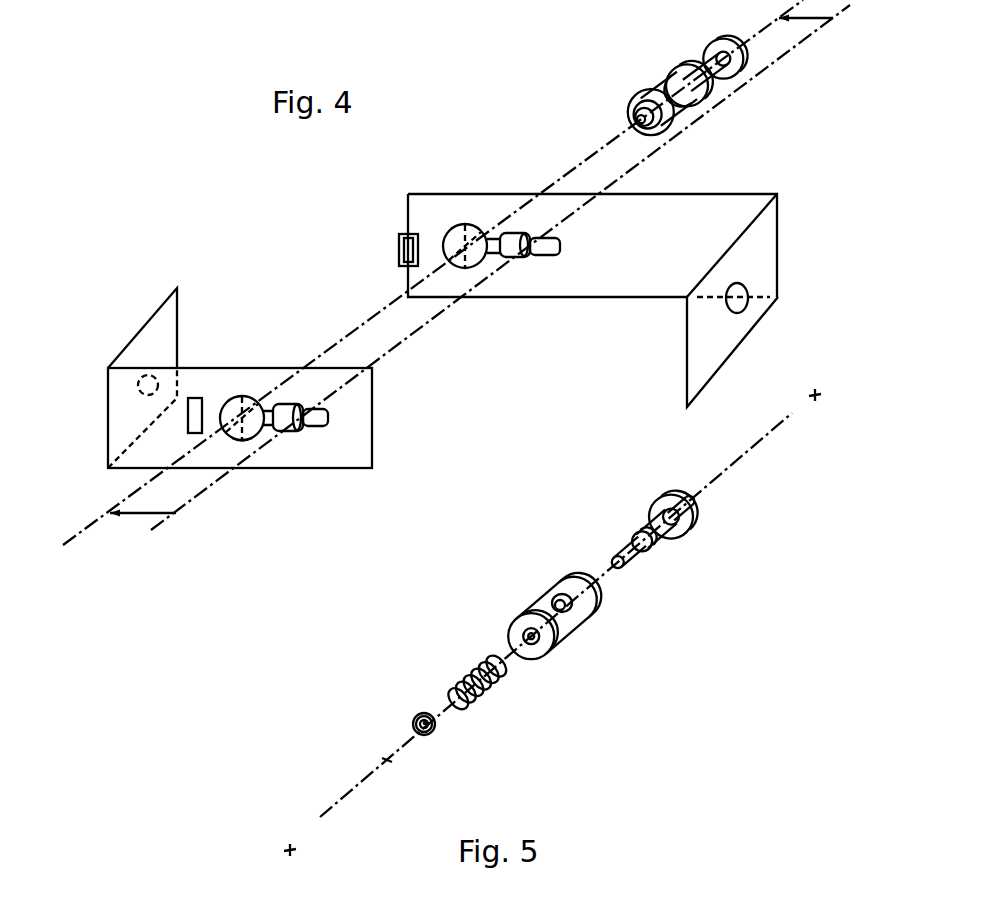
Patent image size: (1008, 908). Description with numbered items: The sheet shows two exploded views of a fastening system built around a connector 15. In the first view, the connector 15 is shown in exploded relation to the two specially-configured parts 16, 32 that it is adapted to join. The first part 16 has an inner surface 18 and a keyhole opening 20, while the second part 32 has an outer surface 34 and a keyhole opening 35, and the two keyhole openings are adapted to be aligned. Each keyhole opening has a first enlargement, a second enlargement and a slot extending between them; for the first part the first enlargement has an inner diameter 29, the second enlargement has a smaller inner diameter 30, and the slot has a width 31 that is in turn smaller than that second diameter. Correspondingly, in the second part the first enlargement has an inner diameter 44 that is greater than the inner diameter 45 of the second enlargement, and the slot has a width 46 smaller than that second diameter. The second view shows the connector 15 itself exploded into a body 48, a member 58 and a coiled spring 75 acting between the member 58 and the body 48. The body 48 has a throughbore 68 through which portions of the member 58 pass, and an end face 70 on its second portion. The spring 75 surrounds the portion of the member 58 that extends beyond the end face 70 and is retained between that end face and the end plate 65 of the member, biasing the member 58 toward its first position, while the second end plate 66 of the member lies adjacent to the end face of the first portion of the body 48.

In FIG. 4, the connector 15 is at (655, 70).
In FIG. 4, the end face 70 is at (628, 104).
In FIG. 5, the end face 70 is at (540, 652).
In FIG. 4, the part 32 is at (576, 249).
In FIG. 4, the outer surface 34 is at (592, 245).
In FIG. 4, the keyhole opening 35 is at (471, 210).
In FIG. 4, the inner diameter 44 is at (445, 243).
In FIG. 4, the inner diameter 45 is at (526, 306).
In FIG. 4, the width 46 is at (490, 262).
In FIG. 4, the keyhole opening 20 is at (228, 380).
In FIG. 4, the inner surface 18 is at (240, 418).
In FIG. 4, the inner diameter 30 is at (342, 476).
In FIG. 4, the part 16 is at (269, 418).
In FIG. 4, the inner diameter 29 is at (236, 442).
In FIG. 4, the width 31 is at (261, 432).
In FIG. 5, the spring 75 is at (453, 664).
In FIG. 5, the end plate 65 is at (436, 733).
In FIG. 5, the throughbore 68 is at (527, 645).
In FIG. 5, the body 48 is at (592, 658).
In FIG. 5, the member 58 is at (701, 535).
In FIG. 5, the second end plate 66 is at (692, 501).